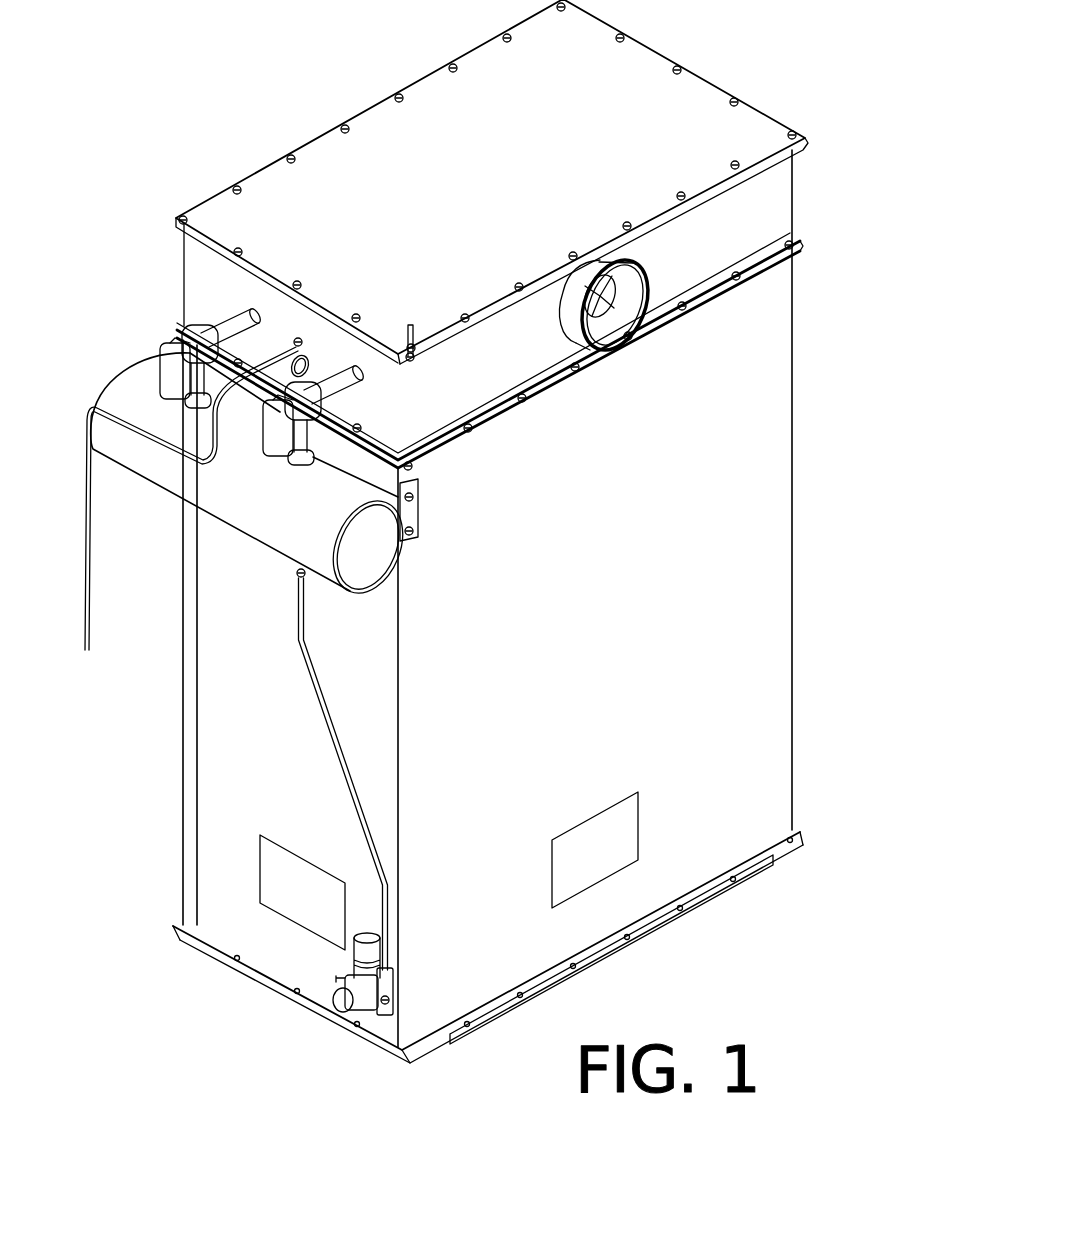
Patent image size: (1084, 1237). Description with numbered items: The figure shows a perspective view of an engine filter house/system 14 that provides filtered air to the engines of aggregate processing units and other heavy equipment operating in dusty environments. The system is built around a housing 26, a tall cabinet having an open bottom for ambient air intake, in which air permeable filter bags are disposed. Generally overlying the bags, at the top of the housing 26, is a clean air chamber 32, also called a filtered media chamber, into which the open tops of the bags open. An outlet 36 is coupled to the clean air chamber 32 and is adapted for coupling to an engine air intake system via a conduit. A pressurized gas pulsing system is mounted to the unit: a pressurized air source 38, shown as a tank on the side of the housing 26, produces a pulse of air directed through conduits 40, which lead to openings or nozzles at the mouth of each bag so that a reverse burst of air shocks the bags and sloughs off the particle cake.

The filter house/system 14 is at (830, 485).
The housing 26 is at (637, 683).
The clean air chamber 32 is at (763, 207).
The outlet 36 is at (574, 322).
The pressurized air source 38 is at (256, 486).
The conduits 40 is at (338, 368).